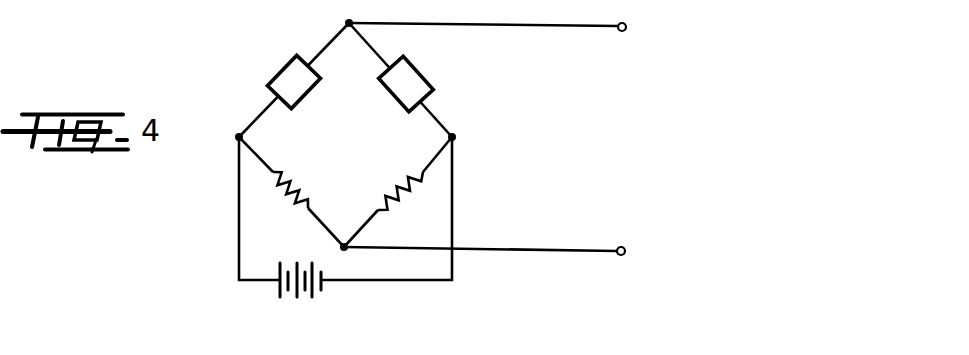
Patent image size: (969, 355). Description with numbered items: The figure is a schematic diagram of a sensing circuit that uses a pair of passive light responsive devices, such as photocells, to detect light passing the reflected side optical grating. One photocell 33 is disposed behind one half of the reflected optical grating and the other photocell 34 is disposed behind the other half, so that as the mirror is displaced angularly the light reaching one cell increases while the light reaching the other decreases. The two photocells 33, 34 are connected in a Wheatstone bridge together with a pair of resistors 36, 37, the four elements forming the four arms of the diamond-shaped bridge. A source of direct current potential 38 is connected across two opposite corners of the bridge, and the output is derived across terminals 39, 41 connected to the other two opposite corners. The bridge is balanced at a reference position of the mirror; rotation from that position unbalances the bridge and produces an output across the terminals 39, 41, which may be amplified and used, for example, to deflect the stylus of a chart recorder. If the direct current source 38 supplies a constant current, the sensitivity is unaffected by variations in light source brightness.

The photocell 33 is at (417, 78).
The photocell 34 is at (272, 78).
The resistor 36 is at (298, 190).
The resistor 37 is at (392, 194).
The source of direct current potential 38 is at (278, 289).
The output terminal 39 is at (626, 26).
The output terminal 41 is at (625, 251).